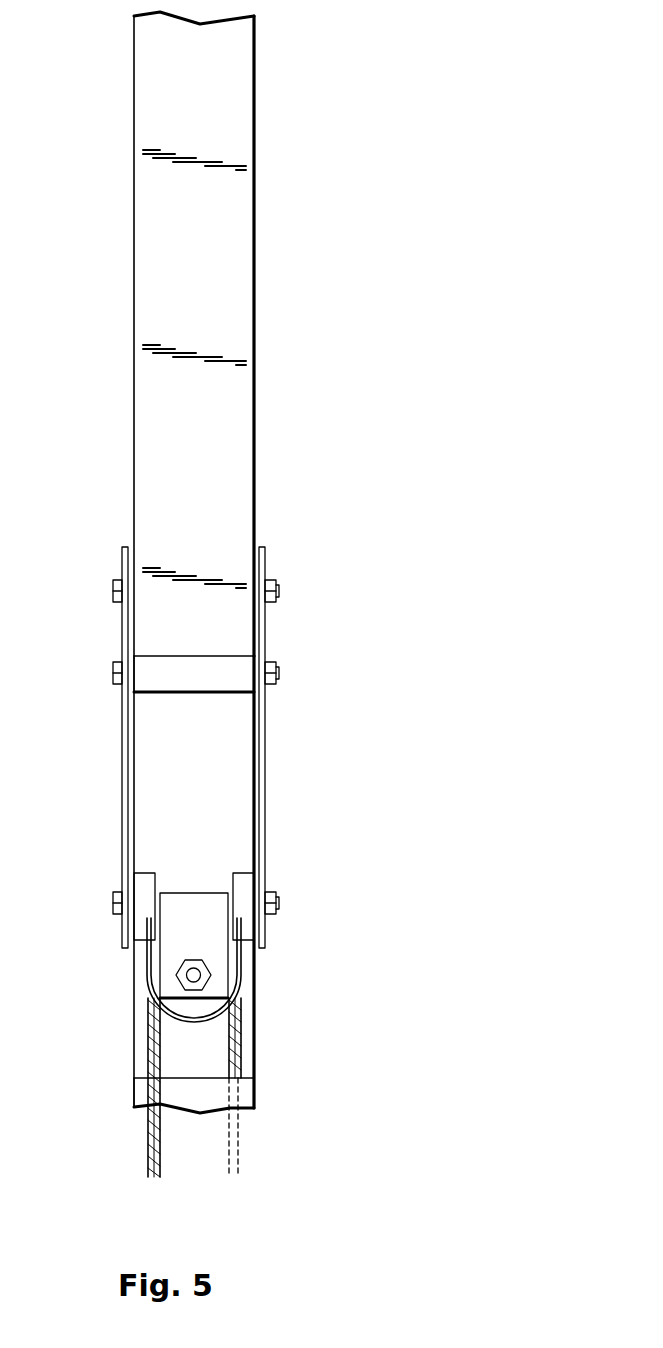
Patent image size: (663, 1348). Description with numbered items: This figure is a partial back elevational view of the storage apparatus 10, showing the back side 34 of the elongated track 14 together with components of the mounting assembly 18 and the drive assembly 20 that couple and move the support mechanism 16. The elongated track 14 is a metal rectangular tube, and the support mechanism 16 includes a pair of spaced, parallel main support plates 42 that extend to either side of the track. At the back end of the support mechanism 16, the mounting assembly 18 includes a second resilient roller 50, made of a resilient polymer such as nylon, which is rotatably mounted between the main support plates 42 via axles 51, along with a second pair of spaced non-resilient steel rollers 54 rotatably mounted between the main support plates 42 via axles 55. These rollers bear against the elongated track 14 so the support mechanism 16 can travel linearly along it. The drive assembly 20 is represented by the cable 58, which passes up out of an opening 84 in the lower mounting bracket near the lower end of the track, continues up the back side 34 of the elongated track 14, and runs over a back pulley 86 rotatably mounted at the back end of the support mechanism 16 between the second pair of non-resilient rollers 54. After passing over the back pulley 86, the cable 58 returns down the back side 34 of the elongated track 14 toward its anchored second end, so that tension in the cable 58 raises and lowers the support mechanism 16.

The storage apparatus 10 is at (352, 176).
The elongated track 14 is at (234, 334).
The support mechanism 16 is at (266, 751).
The mounting assembly 18 is at (163, 693).
The drive assembly 20 is at (250, 1135).
The back side 34 is at (214, 442).
The main support plates 42 is at (122, 808).
The second resilient roller 50 is at (225, 670).
The axles 51 is at (279, 673).
The second pair of spaced non-resilient rollers 54 is at (145, 928).
The axles 55 is at (279, 904).
The cable 58 is at (150, 1148).
The opening 84 is at (243, 1077).
The back pulley 86 is at (240, 965).